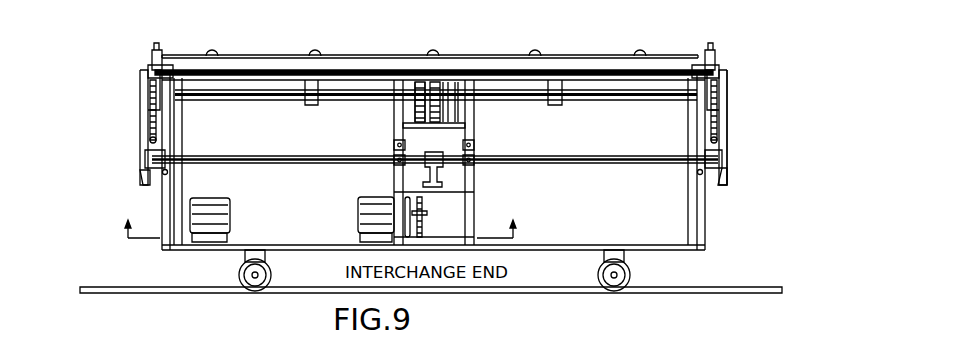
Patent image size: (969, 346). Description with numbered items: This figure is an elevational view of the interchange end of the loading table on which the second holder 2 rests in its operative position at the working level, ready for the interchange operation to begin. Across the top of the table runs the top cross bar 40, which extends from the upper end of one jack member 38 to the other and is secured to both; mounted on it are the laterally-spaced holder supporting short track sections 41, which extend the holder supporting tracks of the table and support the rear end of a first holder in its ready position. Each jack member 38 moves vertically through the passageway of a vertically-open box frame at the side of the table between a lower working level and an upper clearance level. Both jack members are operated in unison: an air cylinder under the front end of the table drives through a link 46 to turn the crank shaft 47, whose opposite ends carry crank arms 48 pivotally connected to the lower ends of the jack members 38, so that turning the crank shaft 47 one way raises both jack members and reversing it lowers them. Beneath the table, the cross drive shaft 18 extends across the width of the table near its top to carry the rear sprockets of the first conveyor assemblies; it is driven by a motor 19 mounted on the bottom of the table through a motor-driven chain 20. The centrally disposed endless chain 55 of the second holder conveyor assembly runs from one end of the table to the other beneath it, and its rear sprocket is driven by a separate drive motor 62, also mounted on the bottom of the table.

The second holder 2 is at (352, 58).
The top cross bar 40 is at (500, 75).
The holder supporting short track sections 41 is at (713, 58).
The jack member 38 is at (728, 148).
The cross drive shaft 18 is at (237, 100).
The crank shaft 47 is at (540, 158).
The motor-driven chain 20 is at (185, 165).
The crank arm 48 is at (715, 172).
The endless chain 55 is at (445, 108).
The link 46 is at (438, 172).
The motor 19 is at (222, 207).
The drive motor 62 is at (372, 208).